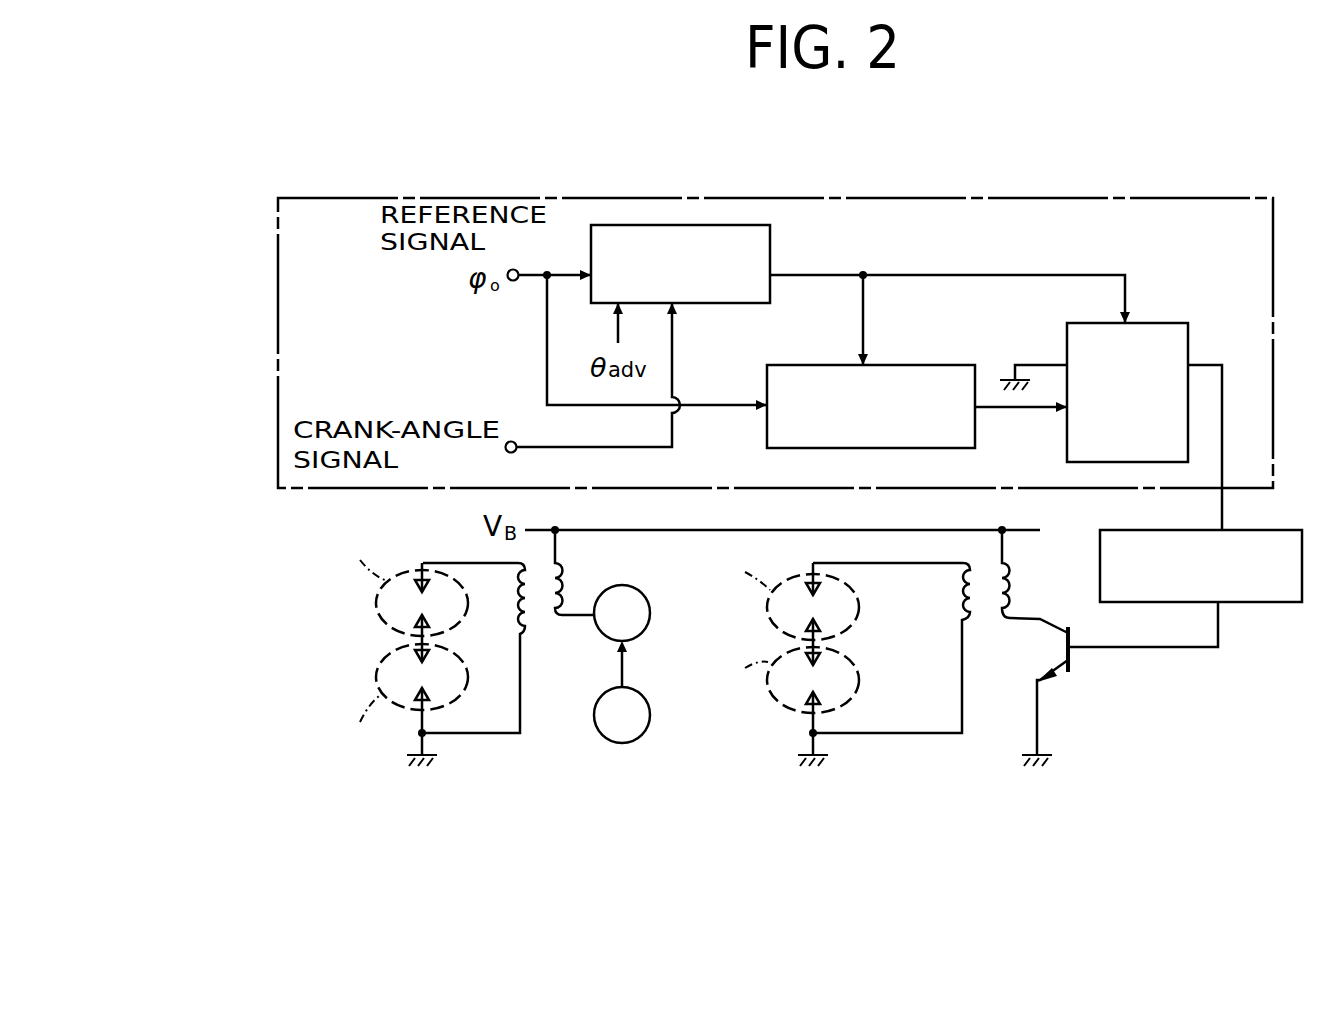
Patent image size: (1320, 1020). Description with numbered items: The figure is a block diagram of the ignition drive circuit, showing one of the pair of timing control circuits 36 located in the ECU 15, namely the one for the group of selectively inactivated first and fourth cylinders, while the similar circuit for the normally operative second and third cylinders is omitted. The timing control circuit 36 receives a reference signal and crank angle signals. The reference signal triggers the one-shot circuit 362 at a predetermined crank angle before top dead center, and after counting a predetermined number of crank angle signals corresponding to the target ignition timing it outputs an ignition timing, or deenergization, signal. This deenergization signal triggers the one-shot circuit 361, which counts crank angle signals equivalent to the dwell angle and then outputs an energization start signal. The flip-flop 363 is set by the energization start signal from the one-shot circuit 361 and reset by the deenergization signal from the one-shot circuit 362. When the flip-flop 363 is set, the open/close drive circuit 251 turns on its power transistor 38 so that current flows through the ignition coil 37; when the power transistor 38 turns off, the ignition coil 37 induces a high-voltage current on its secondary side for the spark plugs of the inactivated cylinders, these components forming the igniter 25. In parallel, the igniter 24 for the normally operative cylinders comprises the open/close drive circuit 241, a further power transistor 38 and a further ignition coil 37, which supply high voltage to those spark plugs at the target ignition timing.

The ECU 15 is at (265, 227).
The timing control circuit 36 is at (962, 197).
The one-shot circuit 361 is at (900, 362).
The one-shot circuit 362 is at (772, 250).
The flip-flop 363 is at (1155, 323).
The igniter 24 is at (703, 670).
The open/close drive circuit 241 is at (622, 692).
The igniter 25 is at (1195, 700).
The open/close drive circuit 251 is at (1245, 612).
The ignition coil 37 is at (541, 630).
The power transistor 38 is at (1060, 670).